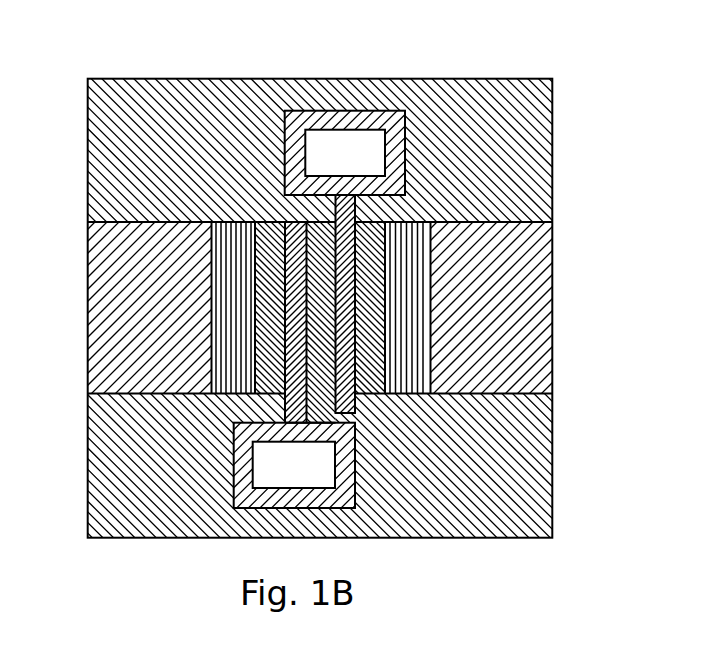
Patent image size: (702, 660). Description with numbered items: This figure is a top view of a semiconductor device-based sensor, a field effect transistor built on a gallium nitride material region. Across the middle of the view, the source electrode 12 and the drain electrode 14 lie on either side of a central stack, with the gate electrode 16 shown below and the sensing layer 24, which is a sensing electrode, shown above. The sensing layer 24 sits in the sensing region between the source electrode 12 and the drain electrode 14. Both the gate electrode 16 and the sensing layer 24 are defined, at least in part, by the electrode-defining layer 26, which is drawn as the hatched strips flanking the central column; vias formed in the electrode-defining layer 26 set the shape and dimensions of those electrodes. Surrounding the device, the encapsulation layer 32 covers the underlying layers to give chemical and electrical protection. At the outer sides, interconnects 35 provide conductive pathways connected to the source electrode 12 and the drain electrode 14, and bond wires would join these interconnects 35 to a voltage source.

The encapsulation layer 32 is at (441, 468).
The sensing layer 24 is at (338, 157).
The gate electrode 16 is at (286, 471).
The electrode-defining layer 26 is at (261, 316).
The source electrode 12 is at (224, 316).
The drain electrode 14 is at (398, 316).
The interconnects 35 is at (136, 307).